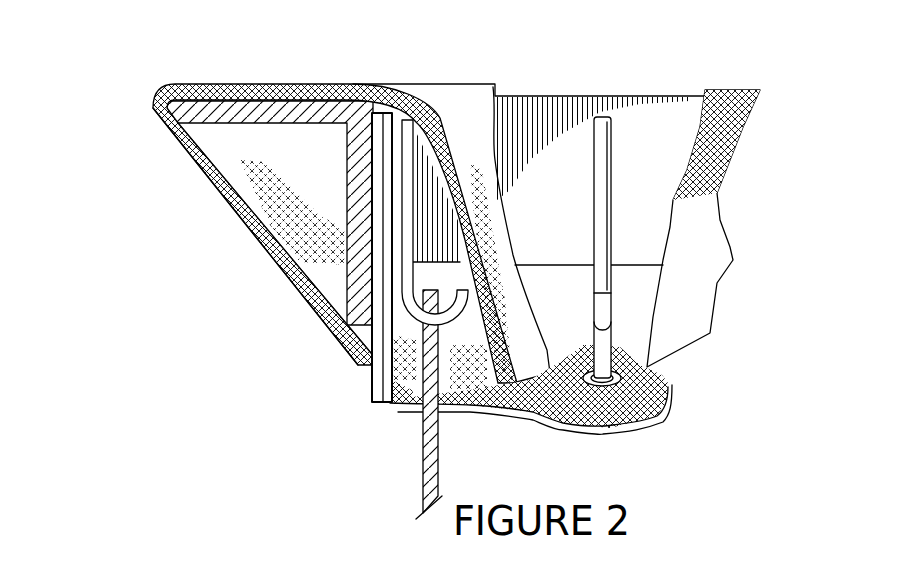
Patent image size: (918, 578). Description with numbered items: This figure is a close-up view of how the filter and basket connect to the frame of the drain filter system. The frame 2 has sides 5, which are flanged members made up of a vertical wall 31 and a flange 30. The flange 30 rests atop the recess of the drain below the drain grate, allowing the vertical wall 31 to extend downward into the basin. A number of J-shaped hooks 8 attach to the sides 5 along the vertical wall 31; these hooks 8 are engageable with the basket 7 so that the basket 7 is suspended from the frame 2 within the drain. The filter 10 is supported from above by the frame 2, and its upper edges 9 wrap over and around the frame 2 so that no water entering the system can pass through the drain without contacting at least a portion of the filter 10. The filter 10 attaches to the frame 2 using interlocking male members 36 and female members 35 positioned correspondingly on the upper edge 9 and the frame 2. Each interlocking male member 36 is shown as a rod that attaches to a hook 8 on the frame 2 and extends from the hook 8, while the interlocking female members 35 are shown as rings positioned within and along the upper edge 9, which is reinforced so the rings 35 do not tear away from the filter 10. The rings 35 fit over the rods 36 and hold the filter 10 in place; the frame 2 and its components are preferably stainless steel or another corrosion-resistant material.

The frame 2 is at (657, 94).
The sides 5 is at (662, 169).
The basket 7 is at (423, 488).
The J-shaped hooks 8 is at (458, 340).
The upper edges 9 is at (370, 362).
The filter 10 is at (258, 152).
The flange 30 is at (200, 118).
The vertical wall 31 is at (328, 282).
The interlocking female members 35 is at (370, 373).
The interlocking male members 36 is at (380, 405).